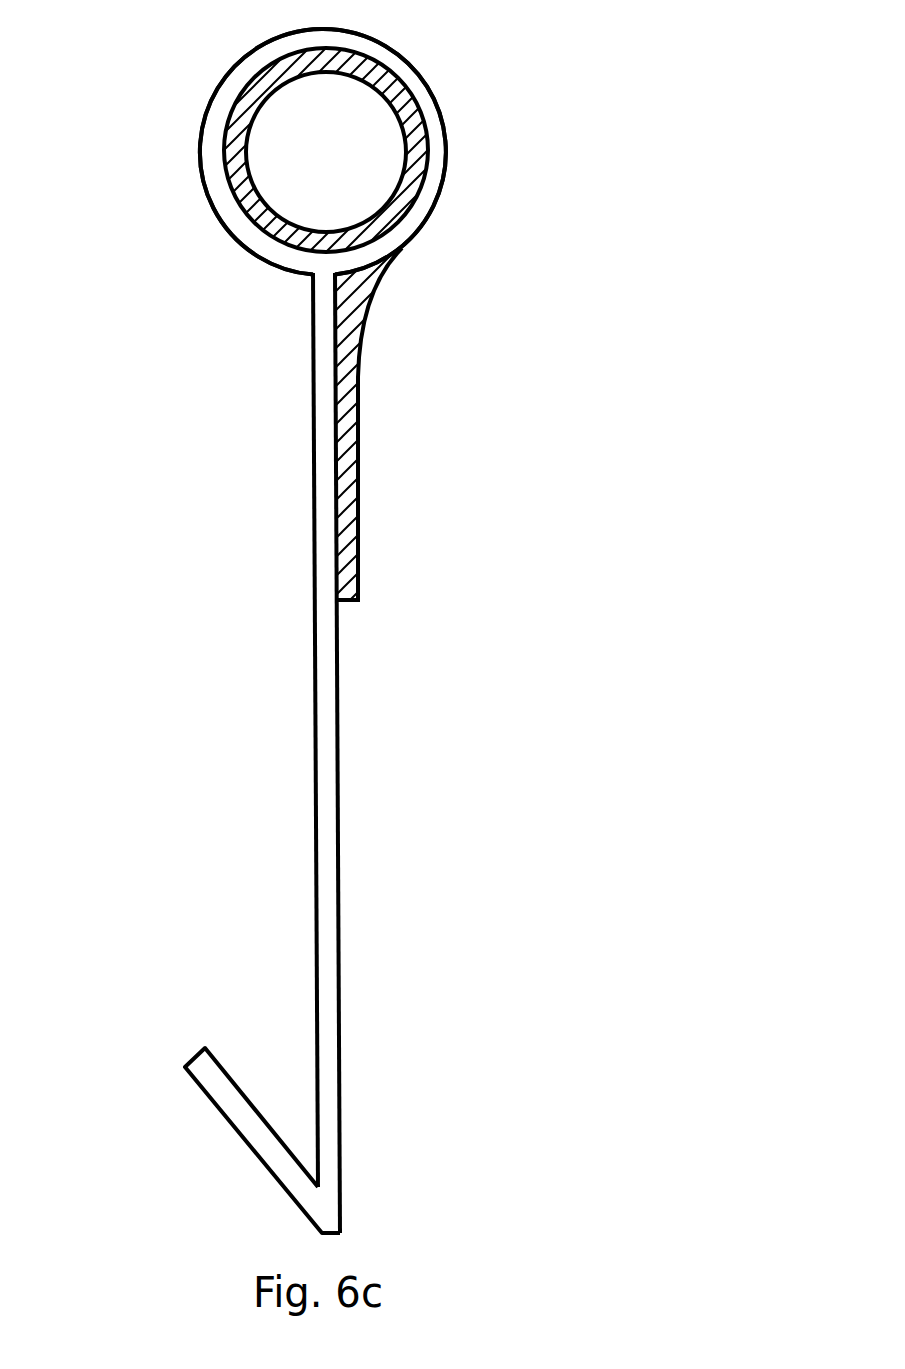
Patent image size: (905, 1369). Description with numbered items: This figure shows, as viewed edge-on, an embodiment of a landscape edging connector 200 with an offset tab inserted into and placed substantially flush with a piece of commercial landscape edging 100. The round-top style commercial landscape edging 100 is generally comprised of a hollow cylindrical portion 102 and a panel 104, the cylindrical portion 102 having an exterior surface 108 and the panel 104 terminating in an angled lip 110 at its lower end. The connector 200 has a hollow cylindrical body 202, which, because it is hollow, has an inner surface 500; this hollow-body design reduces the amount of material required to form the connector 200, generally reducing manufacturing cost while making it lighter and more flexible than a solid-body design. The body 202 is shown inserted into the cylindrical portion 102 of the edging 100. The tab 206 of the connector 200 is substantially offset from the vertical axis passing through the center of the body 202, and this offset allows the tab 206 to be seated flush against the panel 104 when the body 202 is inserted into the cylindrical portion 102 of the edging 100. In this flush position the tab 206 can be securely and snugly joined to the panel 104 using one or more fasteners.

The commercial landscape edging 100 is at (205, 563).
The cylindrical portion 102 is at (418, 95).
The panel 104 is at (327, 750).
The exterior surface 108 is at (444, 180).
The angled lip 110 is at (222, 1092).
The connector 200 is at (392, 365).
The cylindrical body 202 is at (263, 210).
The offset tab 206 is at (348, 518).
The inner surface 500 is at (263, 105).